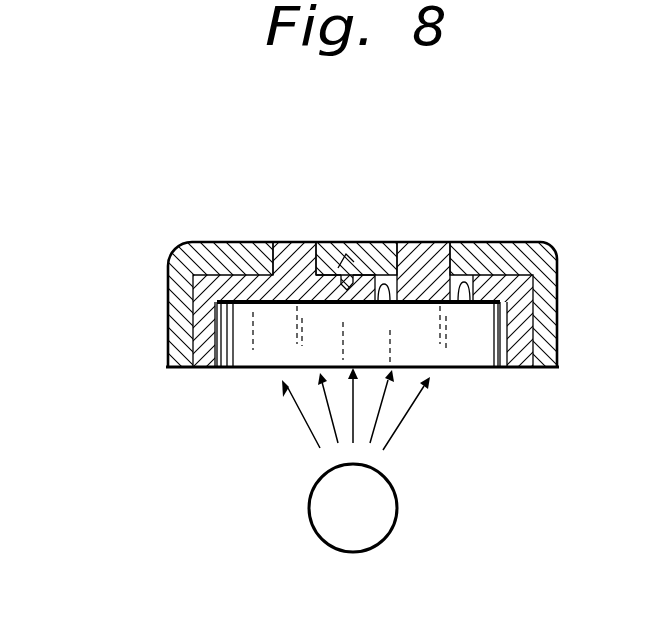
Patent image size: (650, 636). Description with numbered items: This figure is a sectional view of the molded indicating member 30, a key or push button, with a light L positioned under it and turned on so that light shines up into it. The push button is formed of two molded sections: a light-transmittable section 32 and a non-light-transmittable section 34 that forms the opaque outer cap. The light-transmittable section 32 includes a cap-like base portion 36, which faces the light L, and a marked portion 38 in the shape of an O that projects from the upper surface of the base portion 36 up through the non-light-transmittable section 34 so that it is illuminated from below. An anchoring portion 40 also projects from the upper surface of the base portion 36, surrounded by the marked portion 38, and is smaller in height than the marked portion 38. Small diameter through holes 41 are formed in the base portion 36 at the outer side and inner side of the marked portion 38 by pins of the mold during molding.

The indicating member 30 is at (205, 222).
The light-transmittable section 32 is at (180, 337).
The non-light-transmittable section 34 is at (168, 273).
The cap-like base portion 36 is at (258, 322).
The marked portion 38 is at (283, 243).
The anchoring portion 40 is at (343, 248).
The small diameter through holes 41 is at (384, 303).
The light L is at (401, 512).